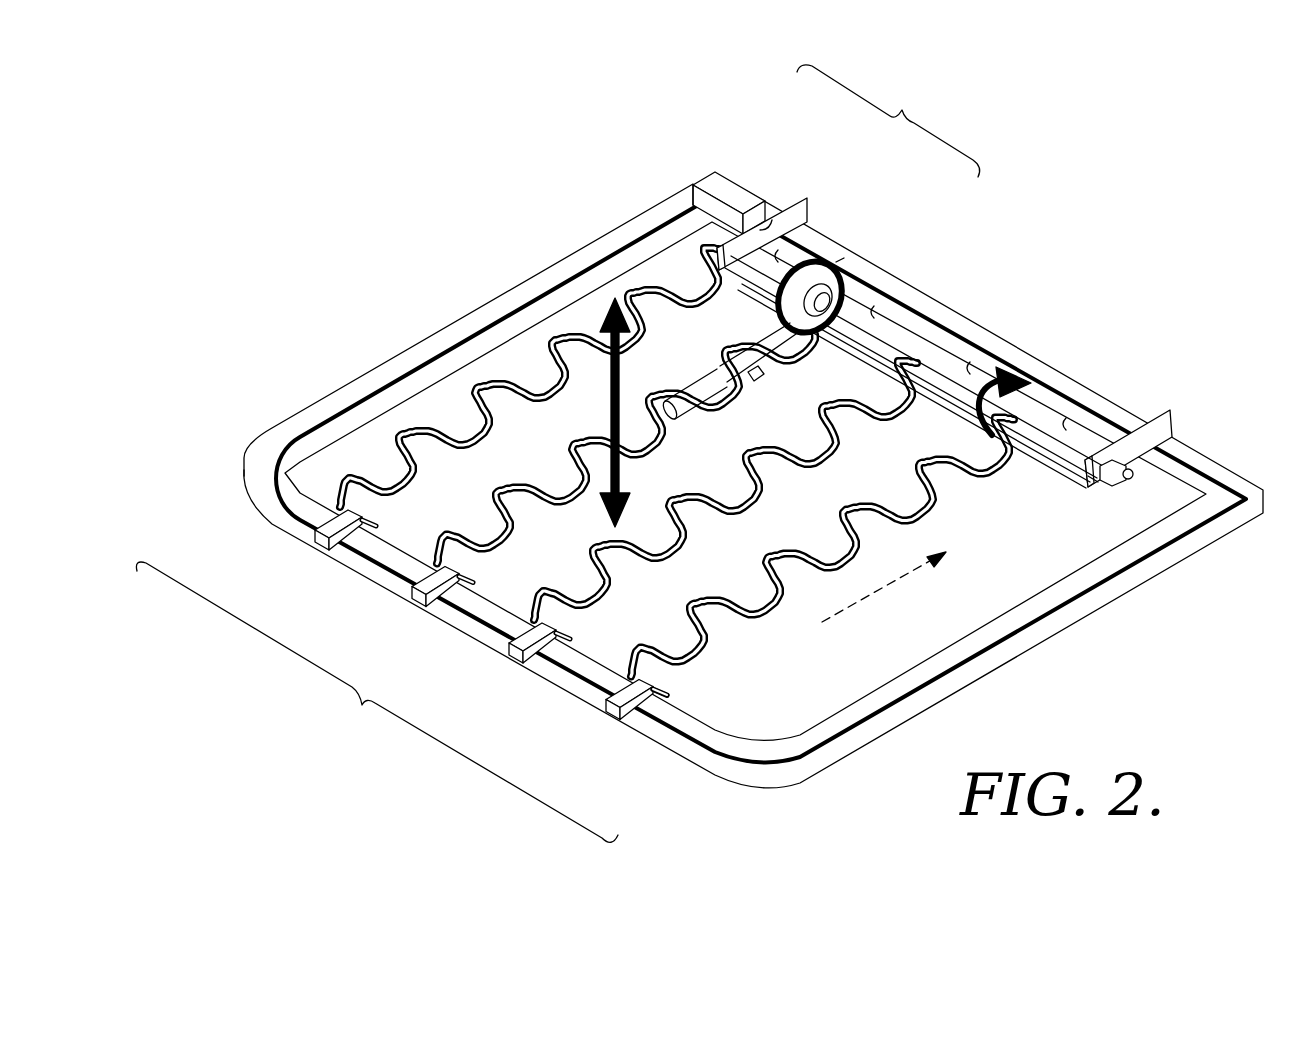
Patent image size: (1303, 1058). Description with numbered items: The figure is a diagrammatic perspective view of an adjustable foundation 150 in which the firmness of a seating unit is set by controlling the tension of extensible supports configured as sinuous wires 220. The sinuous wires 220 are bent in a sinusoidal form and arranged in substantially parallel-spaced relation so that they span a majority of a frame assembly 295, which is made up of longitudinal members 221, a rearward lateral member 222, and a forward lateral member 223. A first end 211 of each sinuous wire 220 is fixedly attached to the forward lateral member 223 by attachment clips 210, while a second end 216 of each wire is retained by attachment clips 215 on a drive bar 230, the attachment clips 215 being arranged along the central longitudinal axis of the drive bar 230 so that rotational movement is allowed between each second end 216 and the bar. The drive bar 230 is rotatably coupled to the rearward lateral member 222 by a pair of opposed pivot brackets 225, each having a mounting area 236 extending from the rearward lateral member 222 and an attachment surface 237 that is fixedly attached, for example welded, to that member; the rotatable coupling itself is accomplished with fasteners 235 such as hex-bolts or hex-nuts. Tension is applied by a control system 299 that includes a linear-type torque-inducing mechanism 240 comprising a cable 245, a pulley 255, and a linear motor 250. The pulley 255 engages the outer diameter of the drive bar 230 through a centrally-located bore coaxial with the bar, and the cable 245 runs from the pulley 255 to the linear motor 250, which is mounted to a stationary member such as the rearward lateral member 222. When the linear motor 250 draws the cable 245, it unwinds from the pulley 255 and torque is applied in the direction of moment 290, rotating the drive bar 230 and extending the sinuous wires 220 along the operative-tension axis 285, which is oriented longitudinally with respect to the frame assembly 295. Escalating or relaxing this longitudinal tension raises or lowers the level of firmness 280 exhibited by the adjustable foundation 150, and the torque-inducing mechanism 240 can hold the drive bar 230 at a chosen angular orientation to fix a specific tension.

The adjustable foundation 150 is at (406, 284).
The attachment clips 210 is at (320, 548).
The first end 211 is at (688, 686).
The attachment clips 215 is at (827, 240).
The second end 216 is at (1066, 470).
The sinuous wires 220 is at (351, 494).
The longitudinal members 221 is at (660, 205).
The rearward lateral member 222 is at (745, 173).
The forward lateral member 223 is at (268, 520).
The pivot brackets 225 is at (806, 232).
The drive bar 230 is at (1092, 492).
The fasteners 235 is at (1108, 486).
The mounting area 236 is at (700, 186).
The attachment surface 237 is at (790, 215).
The torque-inducing mechanism 240 is at (762, 382).
The cable 245 is at (840, 262).
The linear motor 250 is at (696, 373).
The pulley 255 is at (781, 323).
The level of firmness 280 is at (607, 423).
The operative-tension axis 285 is at (884, 594).
The direction of moment 290 is at (1040, 388).
The frame assembly 295 is at (377, 702).
The control system 299 is at (888, 121).